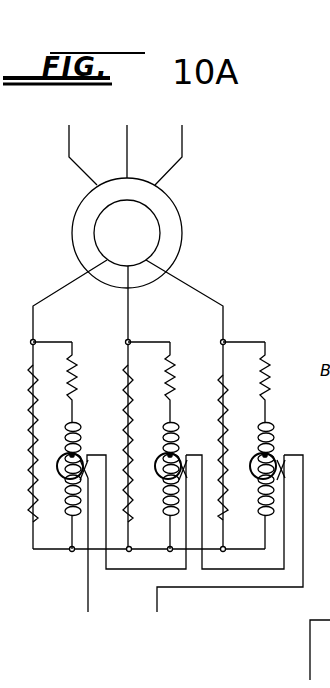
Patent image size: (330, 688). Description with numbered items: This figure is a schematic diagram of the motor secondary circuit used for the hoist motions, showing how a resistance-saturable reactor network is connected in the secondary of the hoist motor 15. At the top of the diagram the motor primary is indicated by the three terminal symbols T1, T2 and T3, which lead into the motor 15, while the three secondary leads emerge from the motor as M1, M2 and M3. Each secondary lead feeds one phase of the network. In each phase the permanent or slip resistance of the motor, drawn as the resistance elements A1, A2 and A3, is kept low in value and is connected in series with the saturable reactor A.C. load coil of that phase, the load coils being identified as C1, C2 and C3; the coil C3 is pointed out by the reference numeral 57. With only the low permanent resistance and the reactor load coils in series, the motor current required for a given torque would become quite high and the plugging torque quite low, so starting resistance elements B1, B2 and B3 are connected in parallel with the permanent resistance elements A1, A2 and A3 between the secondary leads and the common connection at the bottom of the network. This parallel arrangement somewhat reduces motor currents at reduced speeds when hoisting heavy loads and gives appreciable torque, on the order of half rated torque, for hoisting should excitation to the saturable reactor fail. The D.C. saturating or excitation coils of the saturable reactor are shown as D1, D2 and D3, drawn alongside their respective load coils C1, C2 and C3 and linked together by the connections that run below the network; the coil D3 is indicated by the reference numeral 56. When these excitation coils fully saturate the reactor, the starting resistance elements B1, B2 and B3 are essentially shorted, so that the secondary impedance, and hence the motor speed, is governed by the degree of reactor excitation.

The motor 15 is at (183, 230).
The contact 56 is at (305, 463).
The coil 57 is at (289, 418).
The motor primary T1 is at (78, 145).
The motor primary T2 is at (123, 141).
The motor primary T3 is at (170, 143).
The motor secondary M1 is at (70, 404).
The motor secondary M2 is at (141, 407).
The motor secondary M3 is at (197, 404).
The permanent resistance A1 is at (81, 382).
The permanent resistance A2 is at (179, 382).
The permanent resistance A3 is at (274, 382).
The starting resistance element B1 is at (23, 443).
The starting resistance element B2 is at (119, 443).
The starting resistance element B3 is at (214, 447).
The saturable reactor A.C. load coil C1 is at (78, 486).
The saturable reactor A.C. load coil C2 is at (176, 486).
The saturable reactor A.C. load coil C3 is at (272, 485).
The D.C. saturating coil D1 is at (133, 533).
The D.C. saturating coil D2 is at (231, 512).
The D.C. saturating coil D3 is at (230, 533).